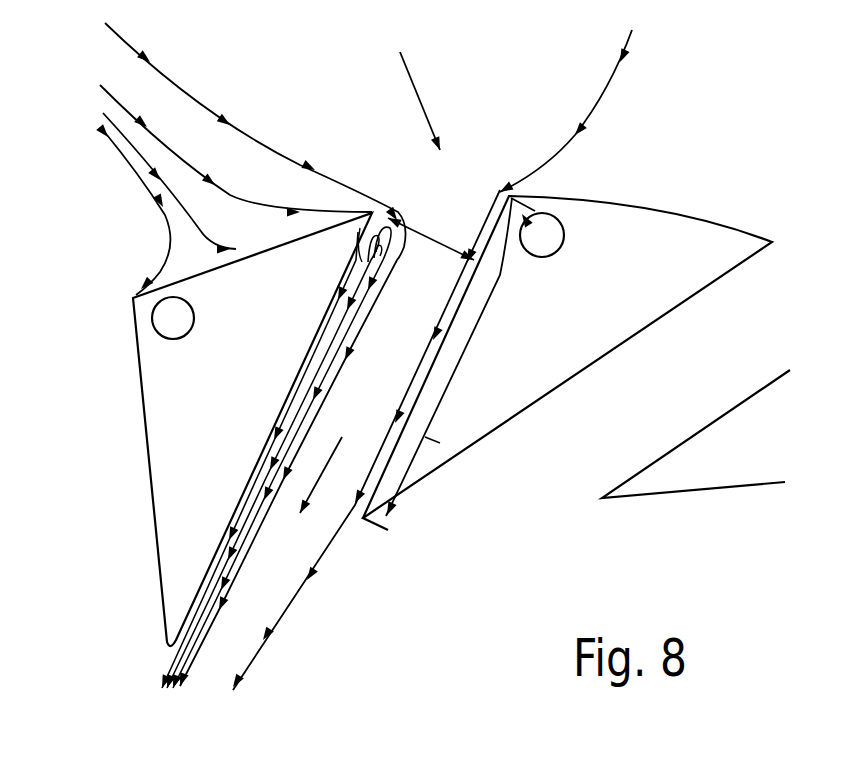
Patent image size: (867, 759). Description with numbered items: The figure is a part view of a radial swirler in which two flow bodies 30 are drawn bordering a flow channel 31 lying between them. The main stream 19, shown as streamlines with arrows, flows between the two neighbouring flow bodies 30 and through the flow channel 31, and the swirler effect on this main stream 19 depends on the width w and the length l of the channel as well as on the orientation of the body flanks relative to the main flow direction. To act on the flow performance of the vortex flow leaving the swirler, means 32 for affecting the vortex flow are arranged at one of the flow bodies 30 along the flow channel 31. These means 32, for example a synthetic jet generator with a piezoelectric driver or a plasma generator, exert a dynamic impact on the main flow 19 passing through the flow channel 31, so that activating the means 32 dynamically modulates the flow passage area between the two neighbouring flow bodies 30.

The main stream 19 is at (410, 95).
The flow body 30 is at (217, 381).
The flow channel 31 is at (383, 351).
The means for affecting the vortex flow 32 is at (350, 250).
The width w is at (430, 234).
The length l is at (425, 437).